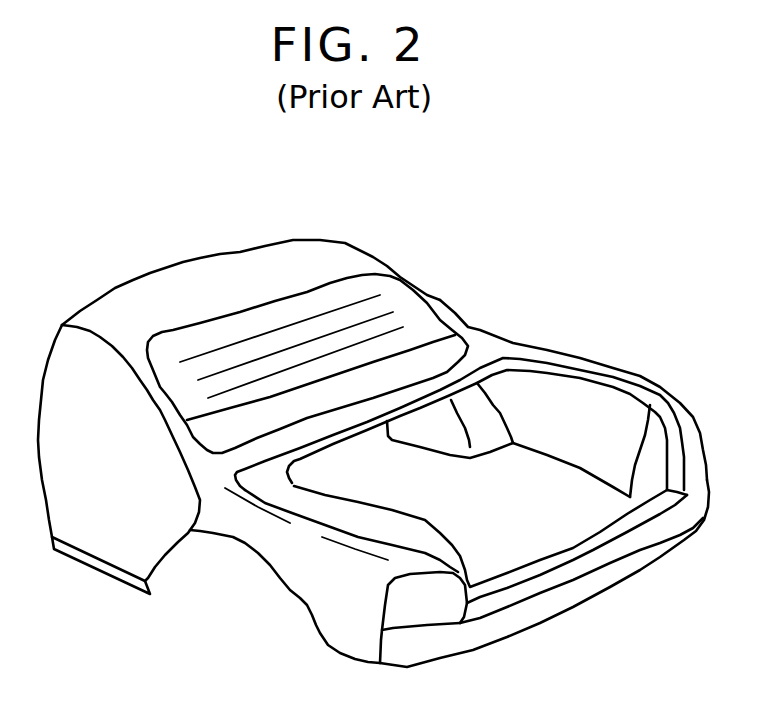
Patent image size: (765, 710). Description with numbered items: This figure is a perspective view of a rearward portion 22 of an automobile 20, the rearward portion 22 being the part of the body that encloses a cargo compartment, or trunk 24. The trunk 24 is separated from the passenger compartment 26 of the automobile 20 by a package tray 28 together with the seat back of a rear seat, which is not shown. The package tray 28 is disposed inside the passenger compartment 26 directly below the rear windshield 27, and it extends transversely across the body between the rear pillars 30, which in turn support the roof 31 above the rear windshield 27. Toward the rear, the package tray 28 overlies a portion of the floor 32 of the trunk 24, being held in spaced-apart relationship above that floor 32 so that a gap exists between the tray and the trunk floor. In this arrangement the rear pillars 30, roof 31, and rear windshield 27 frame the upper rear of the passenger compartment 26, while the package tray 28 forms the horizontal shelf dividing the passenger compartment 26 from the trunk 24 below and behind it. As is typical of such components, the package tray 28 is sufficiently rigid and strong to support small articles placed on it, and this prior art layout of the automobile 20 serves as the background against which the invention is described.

The automobile 20 is at (528, 200).
The rearward portion 22 is at (88, 300).
The cargo compartment (trunk) 24 is at (558, 393).
The passenger compartment 26 is at (175, 348).
The rear windshield 27 is at (345, 297).
The package tray 28 is at (440, 308).
The rear pillars 30 is at (408, 367).
The roof 31 is at (263, 267).
The floor 32 is at (557, 497).